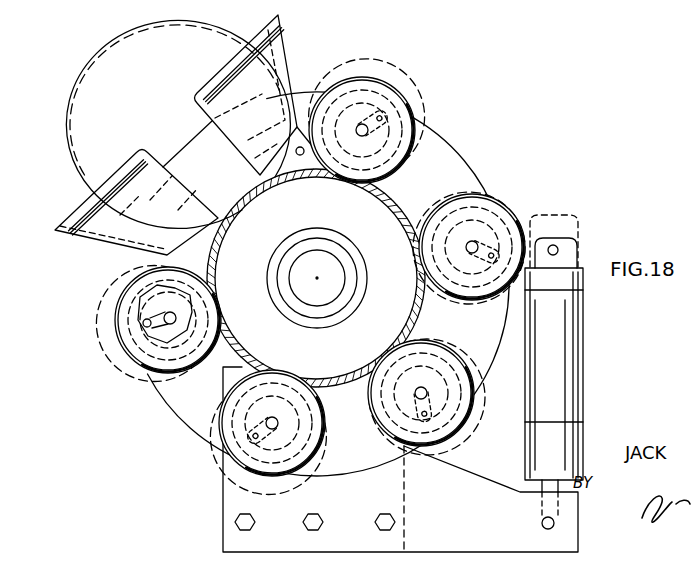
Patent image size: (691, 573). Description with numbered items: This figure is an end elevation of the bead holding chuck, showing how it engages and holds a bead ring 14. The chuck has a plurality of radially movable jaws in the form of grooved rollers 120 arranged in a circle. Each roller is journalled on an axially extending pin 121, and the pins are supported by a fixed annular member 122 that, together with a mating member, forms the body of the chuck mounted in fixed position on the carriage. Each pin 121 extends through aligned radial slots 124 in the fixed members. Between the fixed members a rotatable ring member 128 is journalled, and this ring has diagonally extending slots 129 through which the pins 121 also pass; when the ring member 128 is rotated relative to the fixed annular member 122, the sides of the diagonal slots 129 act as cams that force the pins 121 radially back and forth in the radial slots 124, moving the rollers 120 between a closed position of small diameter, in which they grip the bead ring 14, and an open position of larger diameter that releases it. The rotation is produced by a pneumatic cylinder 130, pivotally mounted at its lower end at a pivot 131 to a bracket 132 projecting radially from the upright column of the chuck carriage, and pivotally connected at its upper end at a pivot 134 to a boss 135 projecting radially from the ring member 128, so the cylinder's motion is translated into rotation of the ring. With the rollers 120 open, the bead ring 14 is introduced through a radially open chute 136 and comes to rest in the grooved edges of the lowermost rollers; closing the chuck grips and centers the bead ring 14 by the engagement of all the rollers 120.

The bead ring 14 is at (111, 43).
The grooved rollers 120 is at (402, 105).
The pins 121 is at (177, 316).
The annular member 122 is at (476, 185).
The radial slots 124 is at (146, 325).
The ring member 128 is at (160, 335).
The diagonal slots 129 is at (140, 305).
The pneumatic cylinder 130 is at (574, 338).
The pivotal mounting 131 is at (541, 523).
The bracket 132 is at (466, 480).
The pivotal connection 134 is at (559, 251).
The boss 135 is at (530, 228).
The chute 136 is at (279, 54).